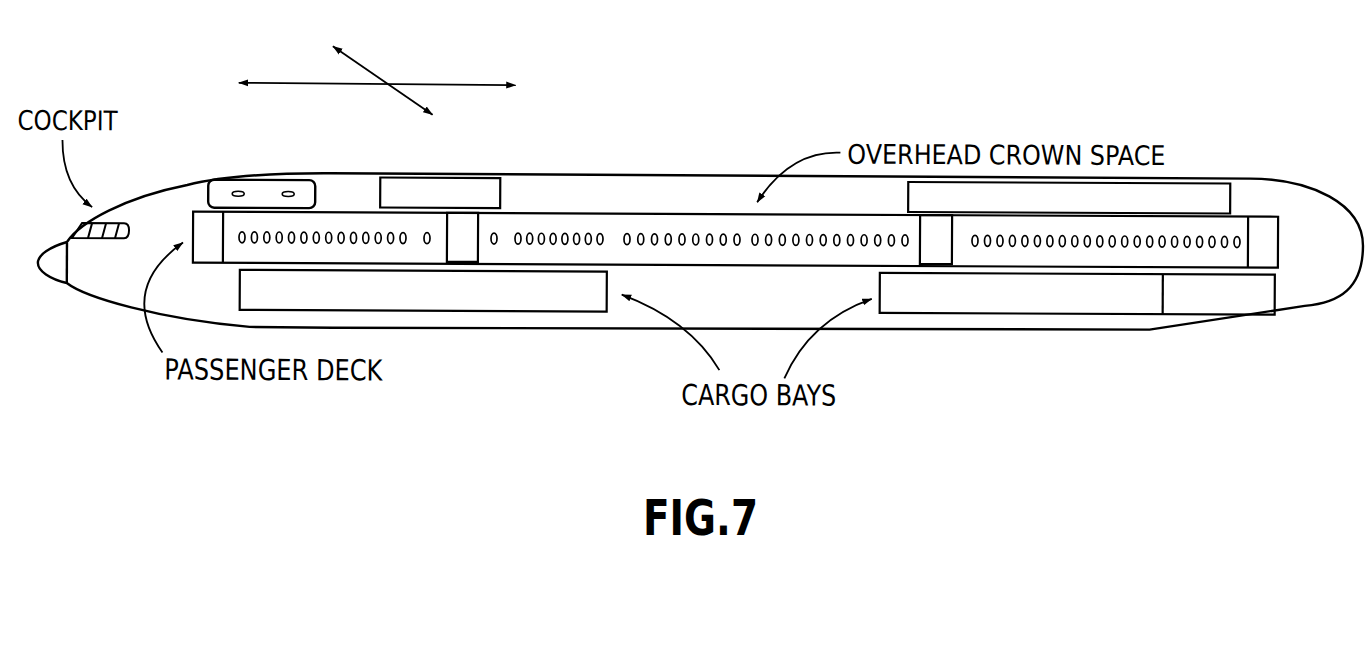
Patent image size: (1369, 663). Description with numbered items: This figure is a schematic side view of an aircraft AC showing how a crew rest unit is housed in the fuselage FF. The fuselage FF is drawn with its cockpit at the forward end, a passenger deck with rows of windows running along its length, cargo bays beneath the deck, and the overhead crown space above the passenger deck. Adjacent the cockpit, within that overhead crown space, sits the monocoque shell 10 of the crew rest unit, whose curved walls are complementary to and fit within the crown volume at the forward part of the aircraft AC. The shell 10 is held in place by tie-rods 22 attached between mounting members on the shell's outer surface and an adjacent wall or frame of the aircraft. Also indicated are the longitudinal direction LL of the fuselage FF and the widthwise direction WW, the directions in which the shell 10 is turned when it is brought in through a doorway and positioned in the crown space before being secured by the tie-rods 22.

The monocoque shell 10 is at (213, 174).
The tie-rods 22 is at (290, 192).
The fuselage FF is at (183, 237).
The longitudinal direction LL is at (368, 69).
The widthwise direction WW is at (373, 67).
The aircraft AC is at (527, 153).